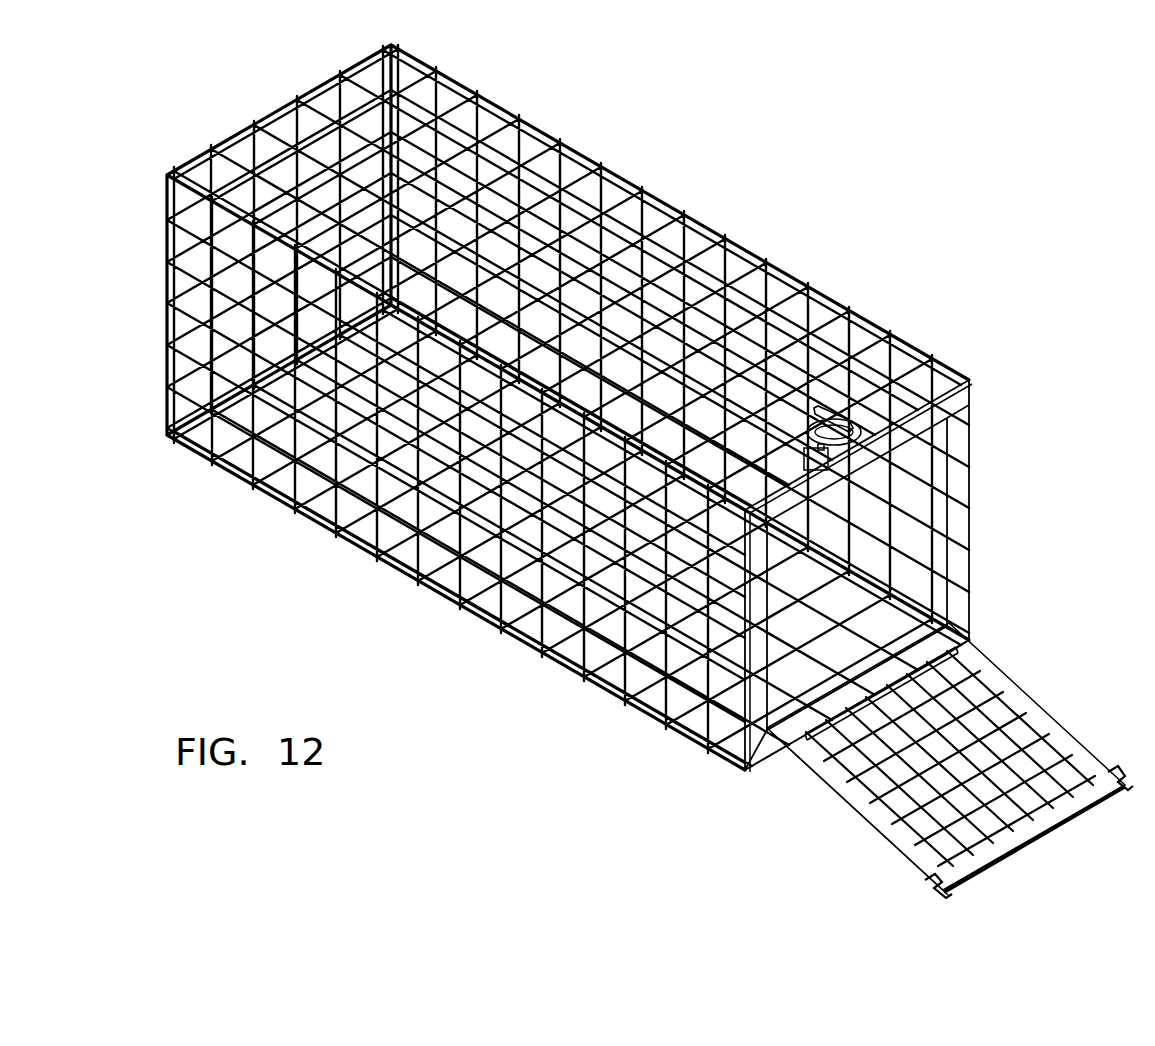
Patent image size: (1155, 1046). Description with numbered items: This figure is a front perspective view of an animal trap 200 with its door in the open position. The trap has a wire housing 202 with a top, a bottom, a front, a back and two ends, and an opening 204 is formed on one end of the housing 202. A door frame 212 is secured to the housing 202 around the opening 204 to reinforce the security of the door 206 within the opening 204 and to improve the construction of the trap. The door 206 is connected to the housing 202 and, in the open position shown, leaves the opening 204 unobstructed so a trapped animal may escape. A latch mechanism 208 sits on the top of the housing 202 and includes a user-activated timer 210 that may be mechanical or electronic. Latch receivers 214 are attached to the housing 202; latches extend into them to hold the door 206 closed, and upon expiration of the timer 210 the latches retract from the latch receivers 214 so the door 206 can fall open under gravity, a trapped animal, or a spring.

The animal trap 200 is at (635, 175).
The housing 202 is at (708, 232).
The opening 204 is at (972, 562).
The door 206 is at (1022, 740).
The latch mechanism 208 is at (855, 428).
The timer 210 is at (821, 450).
The door frame 212 is at (778, 757).
The latch receivers 214 is at (920, 880).